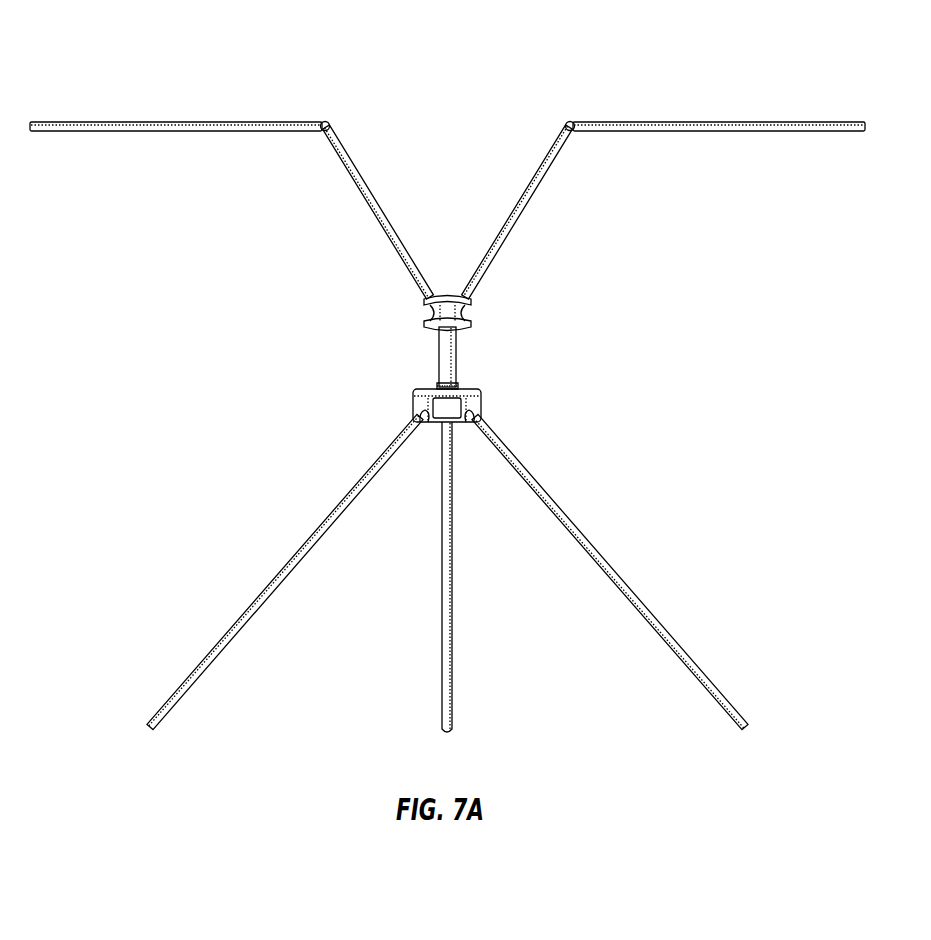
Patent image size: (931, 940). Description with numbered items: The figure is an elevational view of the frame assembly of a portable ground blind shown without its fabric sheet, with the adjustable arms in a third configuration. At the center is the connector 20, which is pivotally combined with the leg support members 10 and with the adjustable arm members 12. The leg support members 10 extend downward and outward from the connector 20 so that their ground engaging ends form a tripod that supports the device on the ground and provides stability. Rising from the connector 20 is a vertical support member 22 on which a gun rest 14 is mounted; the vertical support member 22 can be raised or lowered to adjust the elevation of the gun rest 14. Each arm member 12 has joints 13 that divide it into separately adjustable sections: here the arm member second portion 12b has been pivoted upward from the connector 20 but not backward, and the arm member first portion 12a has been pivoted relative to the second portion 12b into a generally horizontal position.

The leg support member 10 is at (660, 641).
The adjustable arm member 12 is at (302, 110).
The arm member first portion 12a is at (205, 122).
The arm member second portion 12b is at (382, 241).
The joint 13 is at (329, 121).
The gun rest 14 is at (452, 297).
The connector 20 is at (481, 397).
The vertical support member 22 is at (455, 352).